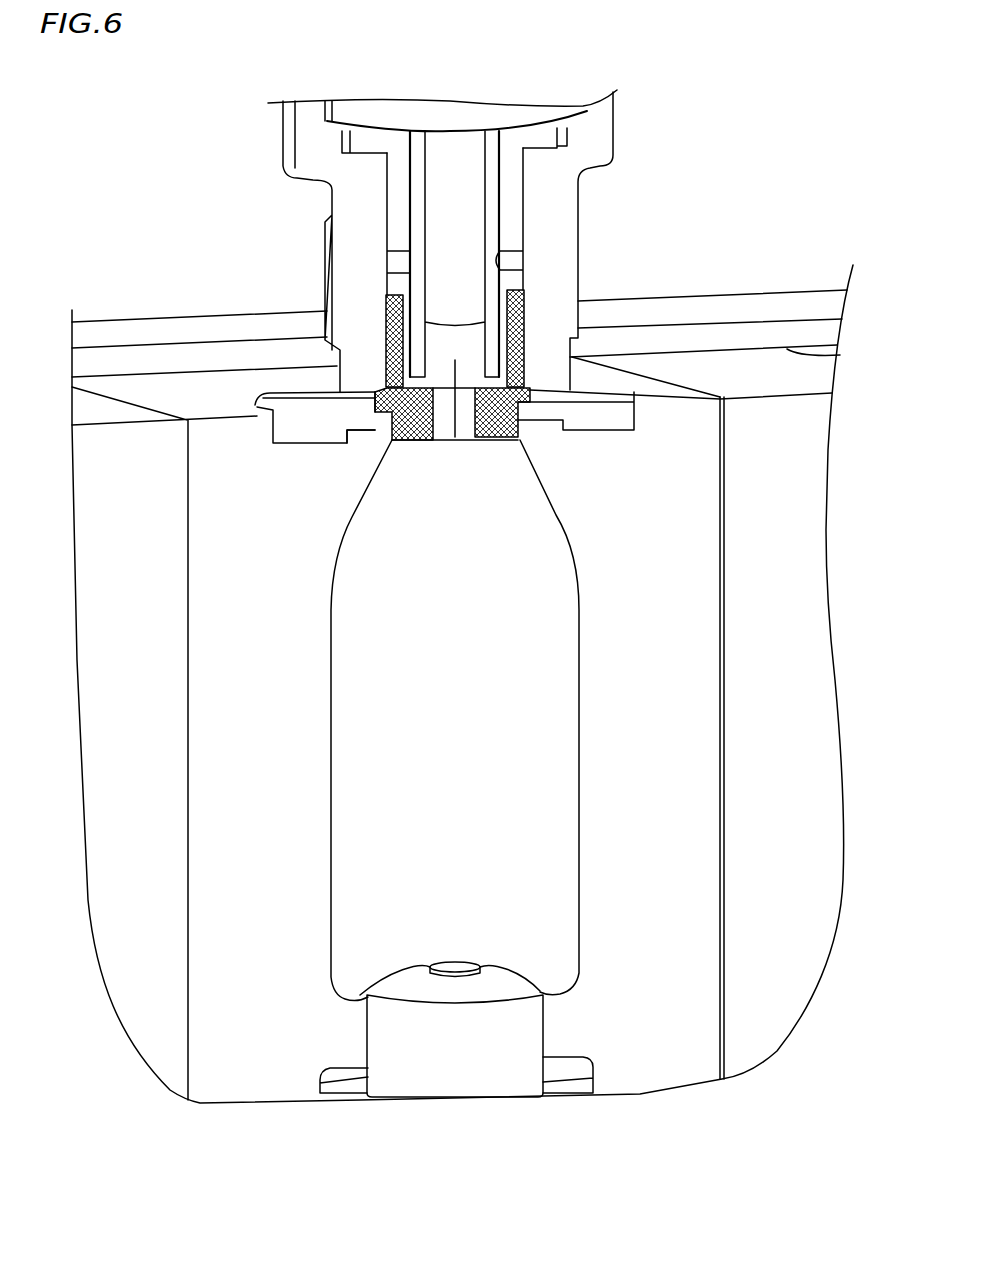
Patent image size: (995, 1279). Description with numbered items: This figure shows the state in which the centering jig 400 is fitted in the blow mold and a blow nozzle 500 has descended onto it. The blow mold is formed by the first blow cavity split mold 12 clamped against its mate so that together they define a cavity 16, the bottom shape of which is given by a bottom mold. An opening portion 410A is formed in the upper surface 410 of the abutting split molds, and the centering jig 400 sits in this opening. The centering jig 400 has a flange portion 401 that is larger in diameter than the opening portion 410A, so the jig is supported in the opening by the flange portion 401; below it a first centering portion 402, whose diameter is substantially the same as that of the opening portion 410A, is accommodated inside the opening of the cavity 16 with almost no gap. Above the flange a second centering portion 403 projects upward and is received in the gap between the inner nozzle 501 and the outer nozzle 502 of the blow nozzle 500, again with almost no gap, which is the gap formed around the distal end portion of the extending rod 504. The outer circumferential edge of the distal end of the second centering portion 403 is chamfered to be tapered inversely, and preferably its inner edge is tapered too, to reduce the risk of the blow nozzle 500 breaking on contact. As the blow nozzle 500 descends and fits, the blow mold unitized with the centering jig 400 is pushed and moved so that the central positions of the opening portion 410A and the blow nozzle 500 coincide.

The first blow cavity split mold 12 is at (134, 385).
The cavity 16 is at (560, 819).
The centering jig 400 is at (597, 442).
The flange portion 401 is at (375, 391).
The first centering portion 402 is at (413, 441).
The second centering portion 403 is at (386, 336).
The upper surface 410 is at (200, 382).
The opening portion 410A is at (381, 434).
The blow nozzle 500 is at (732, 164).
The inner nozzle 501 is at (512, 203).
The outer nozzle 502 is at (557, 237).
The extending rod 504 is at (456, 437).